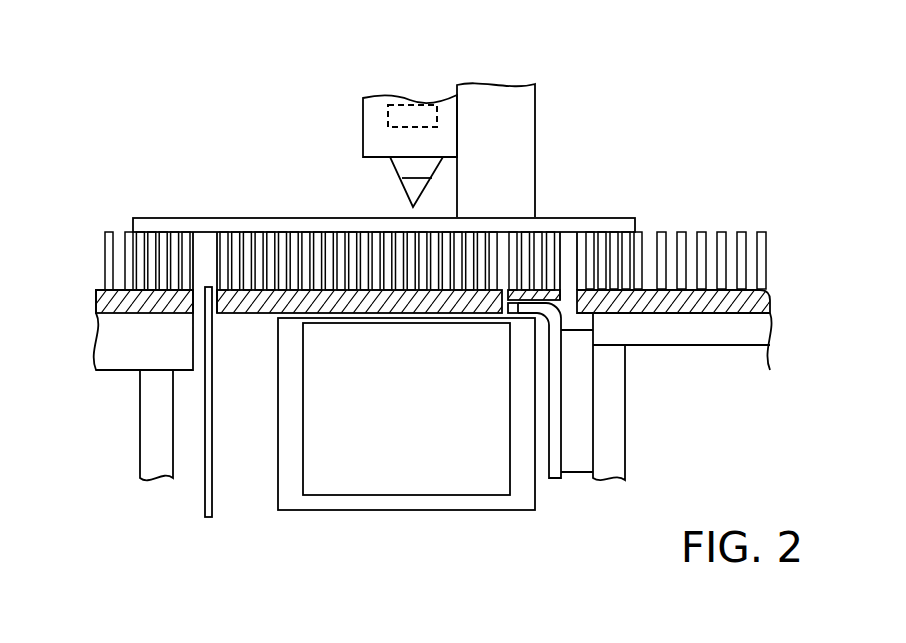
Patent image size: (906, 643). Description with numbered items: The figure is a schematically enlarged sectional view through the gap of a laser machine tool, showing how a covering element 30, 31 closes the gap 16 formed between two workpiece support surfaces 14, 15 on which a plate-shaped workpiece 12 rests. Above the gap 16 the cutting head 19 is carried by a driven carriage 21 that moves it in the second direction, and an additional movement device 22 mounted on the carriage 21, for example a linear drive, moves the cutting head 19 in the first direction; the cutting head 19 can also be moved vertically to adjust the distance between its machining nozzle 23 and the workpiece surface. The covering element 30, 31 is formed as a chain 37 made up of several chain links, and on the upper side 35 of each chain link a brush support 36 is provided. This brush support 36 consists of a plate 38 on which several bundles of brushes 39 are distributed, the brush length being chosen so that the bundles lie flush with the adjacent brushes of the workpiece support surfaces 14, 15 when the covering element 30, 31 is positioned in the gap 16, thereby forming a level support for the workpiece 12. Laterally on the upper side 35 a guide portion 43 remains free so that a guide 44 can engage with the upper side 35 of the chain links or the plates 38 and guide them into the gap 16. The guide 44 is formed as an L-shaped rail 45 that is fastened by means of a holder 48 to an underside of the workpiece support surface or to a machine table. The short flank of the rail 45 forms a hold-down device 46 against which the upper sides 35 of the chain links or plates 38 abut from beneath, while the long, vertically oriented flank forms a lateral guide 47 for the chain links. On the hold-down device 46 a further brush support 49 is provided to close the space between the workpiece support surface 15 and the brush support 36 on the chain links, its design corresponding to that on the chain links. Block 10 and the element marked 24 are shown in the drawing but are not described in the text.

The laser processing head 10 is at (523, 112).
The plate-shaped workpiece 12 is at (570, 226).
The workpiece support surface 14 is at (117, 216).
The workpiece support surface 15 is at (742, 220).
The gap 16 is at (192, 413).
The cutting head 19 is at (402, 168).
The carriage 21 is at (363, 130).
The additional movement device 22 is at (386, 112).
The machining nozzle 23 is at (405, 193).
The pins 24 is at (675, 637).
The covering element 30 is at (258, 443).
The covering element 31 is at (406, 409).
The upper side 35 is at (385, 313).
The brush support 36 is at (259, 331).
The chain 37 is at (384, 520).
The plate 38 is at (237, 305).
The brushes 39 is at (280, 240).
The guide portion 43 is at (503, 305).
The guide 44 is at (582, 381).
The rail 45 is at (207, 515).
The hold-down device 46 is at (560, 316).
The lateral guide 47 is at (543, 457).
The holder 48 is at (578, 460).
The brush support 49 is at (578, 236).